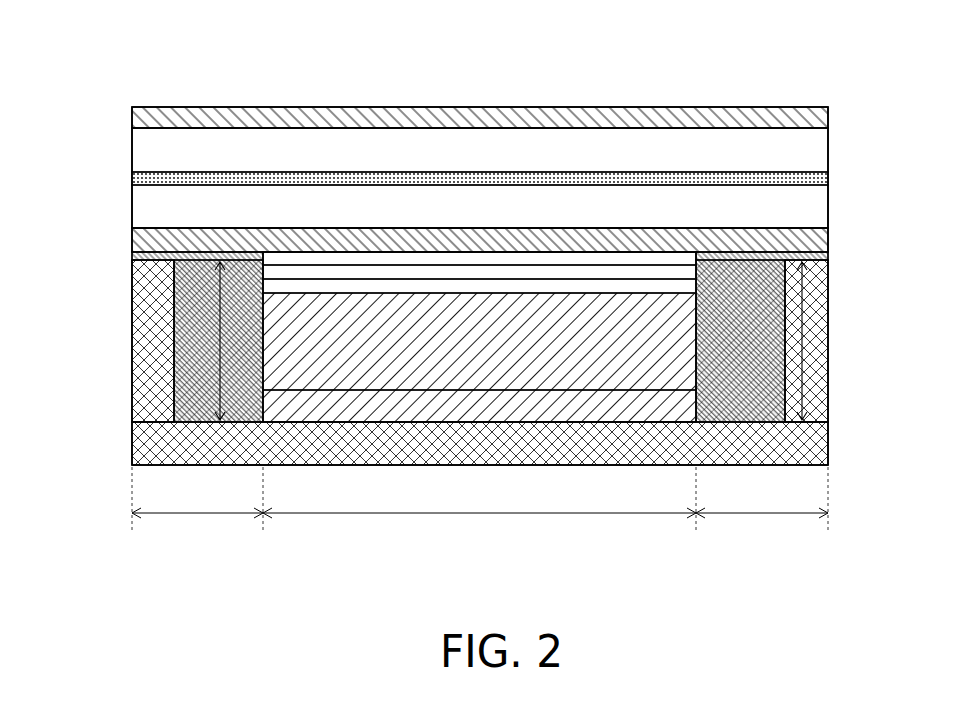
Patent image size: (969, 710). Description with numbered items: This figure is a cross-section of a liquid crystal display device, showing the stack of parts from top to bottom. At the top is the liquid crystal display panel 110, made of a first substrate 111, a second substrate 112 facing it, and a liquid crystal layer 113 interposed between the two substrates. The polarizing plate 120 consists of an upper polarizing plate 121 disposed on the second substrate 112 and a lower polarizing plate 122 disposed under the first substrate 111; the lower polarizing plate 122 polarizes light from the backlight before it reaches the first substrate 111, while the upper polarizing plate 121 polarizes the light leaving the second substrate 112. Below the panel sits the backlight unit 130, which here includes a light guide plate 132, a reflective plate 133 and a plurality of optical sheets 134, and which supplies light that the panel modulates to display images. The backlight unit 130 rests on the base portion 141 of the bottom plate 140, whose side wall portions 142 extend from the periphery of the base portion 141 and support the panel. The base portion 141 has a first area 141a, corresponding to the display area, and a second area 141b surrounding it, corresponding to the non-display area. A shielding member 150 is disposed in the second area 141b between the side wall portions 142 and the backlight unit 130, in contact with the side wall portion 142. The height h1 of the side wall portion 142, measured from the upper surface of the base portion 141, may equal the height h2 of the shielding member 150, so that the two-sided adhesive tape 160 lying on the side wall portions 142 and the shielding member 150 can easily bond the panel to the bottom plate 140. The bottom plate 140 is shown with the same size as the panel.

The liquid crystal display panel 110 is at (888, 147).
The first substrate 111 is at (811, 205).
The second substrate 112 is at (811, 152).
The liquid crystal layer 113 is at (811, 178).
The polarizing plate 120 is at (62, 152).
The upper polarizing plate 121 is at (140, 121).
The lower polarizing plate 122 is at (142, 235).
The backlight unit 130 is at (668, 60).
The light guide plate 132 is at (594, 325).
The reflective plate 133 is at (497, 405).
The optical sheets 134 is at (627, 288).
The bottom plate 140 is at (893, 397).
The base portion 141 is at (807, 440).
The side wall portions 142 is at (813, 400).
The shielding member 150 is at (197, 335).
The adhesive tape 160 is at (142, 256).
The height of side wall portion h1 is at (802, 340).
The height of shielding member h2 is at (220, 383).
The first area 141a is at (479, 526).
The second area 141b is at (480, 505).